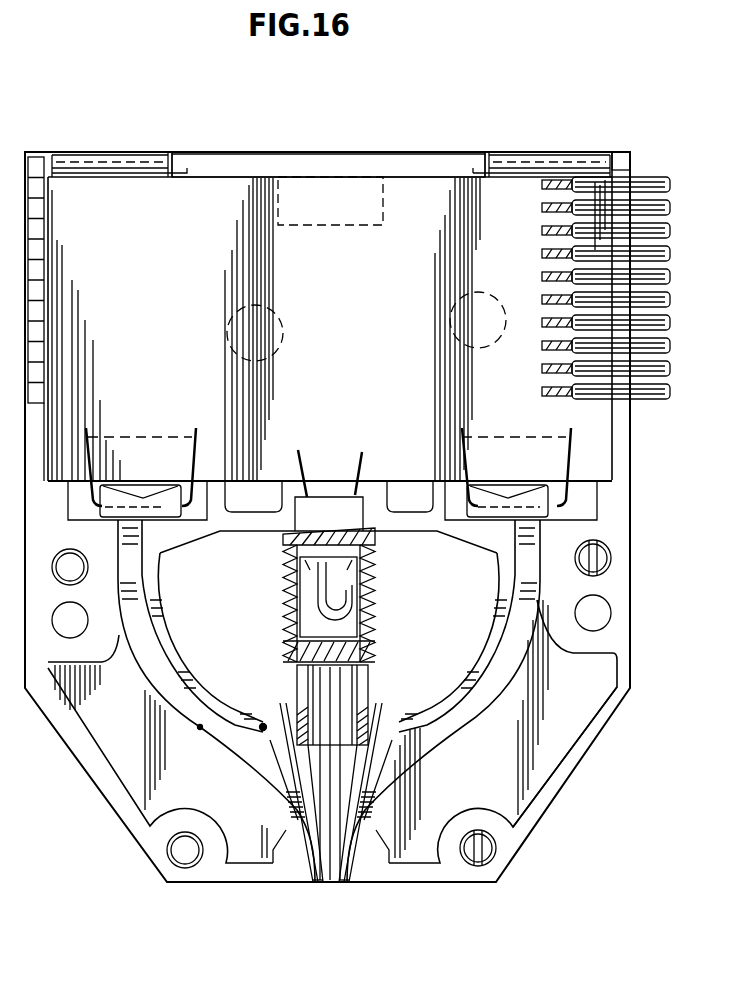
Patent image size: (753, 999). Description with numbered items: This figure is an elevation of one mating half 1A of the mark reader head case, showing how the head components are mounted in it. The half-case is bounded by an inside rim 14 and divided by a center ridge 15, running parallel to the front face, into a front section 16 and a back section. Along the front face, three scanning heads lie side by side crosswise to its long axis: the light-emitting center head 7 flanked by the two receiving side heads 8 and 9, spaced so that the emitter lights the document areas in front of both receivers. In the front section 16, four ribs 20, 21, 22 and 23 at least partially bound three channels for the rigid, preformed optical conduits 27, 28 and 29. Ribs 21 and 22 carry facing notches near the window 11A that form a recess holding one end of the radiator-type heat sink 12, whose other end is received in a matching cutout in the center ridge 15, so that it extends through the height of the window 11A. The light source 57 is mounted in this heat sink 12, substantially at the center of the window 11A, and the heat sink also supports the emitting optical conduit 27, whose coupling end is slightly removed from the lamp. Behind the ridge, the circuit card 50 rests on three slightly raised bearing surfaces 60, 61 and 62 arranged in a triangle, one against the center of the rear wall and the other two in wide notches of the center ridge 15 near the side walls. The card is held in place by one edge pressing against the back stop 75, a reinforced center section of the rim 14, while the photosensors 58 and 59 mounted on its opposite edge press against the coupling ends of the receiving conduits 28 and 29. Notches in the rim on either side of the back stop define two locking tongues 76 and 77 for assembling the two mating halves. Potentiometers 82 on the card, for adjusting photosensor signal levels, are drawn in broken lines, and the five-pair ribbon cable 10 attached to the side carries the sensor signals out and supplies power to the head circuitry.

The mating half 1A is at (318, 144).
The center head 7 is at (330, 883).
The side head 8 is at (313, 887).
The side head 9 is at (350, 887).
The ribbon cable 10 is at (645, 205).
The window 11A is at (245, 672).
The heat sink 12 is at (373, 632).
The rim 14 is at (612, 497).
The ridge 15 is at (413, 520).
The front section 16 is at (500, 723).
The rib 20 is at (462, 725).
The rib 21 is at (457, 677).
The rib 22 is at (173, 650).
The rib 23 is at (227, 743).
The optical conduit 27 is at (327, 763).
The optical conduit 28 is at (187, 690).
The optical conduit 29 is at (507, 700).
The circuit card 50 is at (117, 192).
The light source 57 is at (323, 597).
The photosensor 58 is at (173, 507).
The photosensor 59 is at (488, 512).
The bearing surface 60 is at (384, 203).
The bearing surface 61 is at (137, 433).
The bearing surface 62 is at (507, 433).
The back stop 75 is at (222, 190).
The locking tongue 76 is at (158, 118).
The locking tongue 77 is at (565, 144).
The potentiometers 82 is at (284, 338).